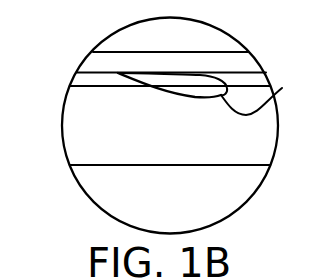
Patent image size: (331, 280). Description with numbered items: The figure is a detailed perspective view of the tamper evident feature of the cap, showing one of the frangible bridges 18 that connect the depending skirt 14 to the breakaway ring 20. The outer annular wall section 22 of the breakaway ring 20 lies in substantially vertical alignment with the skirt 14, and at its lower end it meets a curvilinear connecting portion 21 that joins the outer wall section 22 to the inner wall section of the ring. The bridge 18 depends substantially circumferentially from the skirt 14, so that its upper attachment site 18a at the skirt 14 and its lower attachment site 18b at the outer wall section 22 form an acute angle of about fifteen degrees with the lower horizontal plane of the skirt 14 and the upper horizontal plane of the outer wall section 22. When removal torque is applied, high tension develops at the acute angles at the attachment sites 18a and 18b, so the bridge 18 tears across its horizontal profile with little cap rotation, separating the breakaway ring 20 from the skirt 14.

The depending skirt 14 is at (97, 62).
The frangible bridges 18 is at (193, 74).
The upper attachment site 18a is at (228, 70).
The lower attachment site 18b is at (151, 84).
The breakaway ring 20 is at (137, 171).
The curvilinear connecting portion 21 is at (187, 166).
The outer annular wall section 22 is at (72, 120).